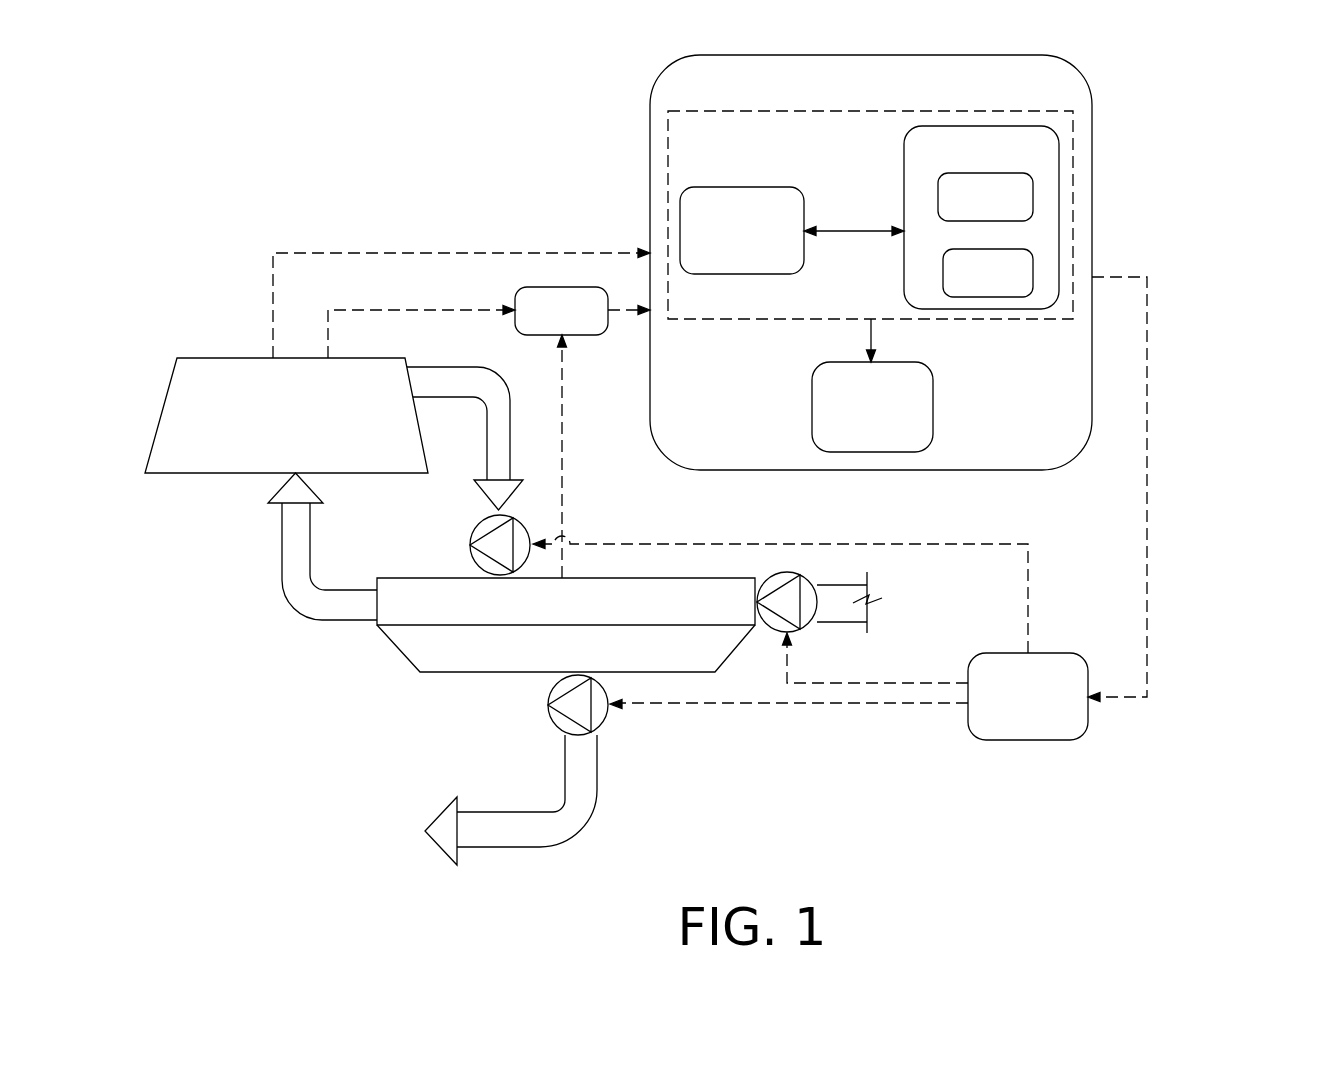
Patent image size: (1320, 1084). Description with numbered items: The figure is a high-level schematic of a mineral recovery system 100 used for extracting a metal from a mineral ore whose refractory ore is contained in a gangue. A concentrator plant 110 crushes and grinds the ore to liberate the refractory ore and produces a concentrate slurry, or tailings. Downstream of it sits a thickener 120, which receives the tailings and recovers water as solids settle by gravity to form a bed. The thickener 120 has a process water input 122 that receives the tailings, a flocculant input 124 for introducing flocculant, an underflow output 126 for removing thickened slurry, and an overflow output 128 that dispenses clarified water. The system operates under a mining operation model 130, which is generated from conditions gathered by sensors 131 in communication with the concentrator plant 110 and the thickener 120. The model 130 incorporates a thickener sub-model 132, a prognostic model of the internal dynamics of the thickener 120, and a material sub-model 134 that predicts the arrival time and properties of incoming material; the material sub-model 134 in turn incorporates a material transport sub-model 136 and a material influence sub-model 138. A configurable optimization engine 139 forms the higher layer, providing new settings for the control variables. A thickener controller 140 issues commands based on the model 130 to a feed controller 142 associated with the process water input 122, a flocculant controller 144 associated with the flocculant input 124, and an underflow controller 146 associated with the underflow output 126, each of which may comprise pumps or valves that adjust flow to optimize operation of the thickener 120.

The mineral recovery system 100 is at (1150, 142).
The concentrator plant 110 is at (261, 426).
The thickener 120 is at (397, 647).
The process water input 122 is at (485, 450).
The flocculant input 124 is at (832, 623).
The underflow output 126 is at (599, 777).
The overflow output 128 is at (280, 545).
The mining operation model 130 is at (853, 100).
The sensors 131 is at (541, 324).
The thickener sub-model 132 is at (719, 245).
The material sub-model 134 is at (964, 164).
The material transport sub-model 136 is at (964, 213).
The material influence sub-model 138 is at (964, 285).
The configurable optimization engine 139 is at (850, 416).
The thickener controller 140 is at (1007, 707).
The feed controller 142 is at (470, 547).
The flocculant controller 144 is at (780, 575).
The underflow controller 146 is at (550, 717).